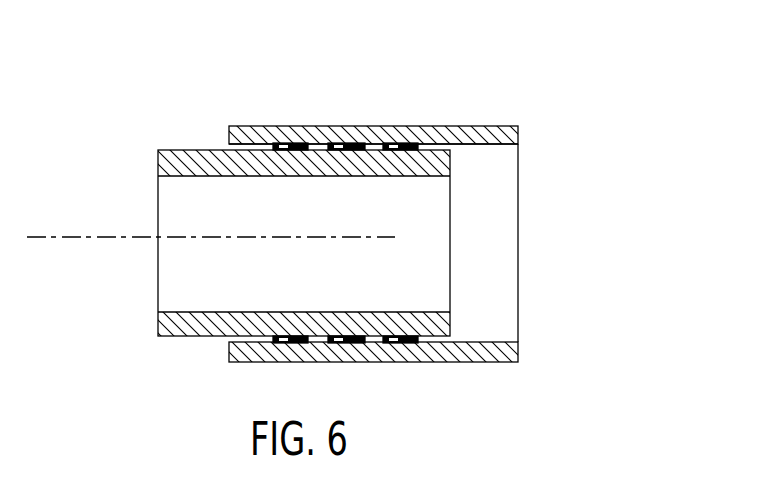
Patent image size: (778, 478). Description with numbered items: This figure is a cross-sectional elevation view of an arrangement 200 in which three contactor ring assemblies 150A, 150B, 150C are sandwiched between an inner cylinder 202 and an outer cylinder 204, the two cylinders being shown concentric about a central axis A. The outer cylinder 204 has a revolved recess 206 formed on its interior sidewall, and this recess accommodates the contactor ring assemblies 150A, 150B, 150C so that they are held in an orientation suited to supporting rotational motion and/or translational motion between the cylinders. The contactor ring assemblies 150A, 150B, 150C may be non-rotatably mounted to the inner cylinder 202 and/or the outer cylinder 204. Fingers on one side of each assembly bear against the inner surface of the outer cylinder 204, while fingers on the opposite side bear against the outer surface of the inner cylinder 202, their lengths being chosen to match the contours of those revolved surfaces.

The fluid conduit assembly 200 is at (389, 199).
The inner cylinder 202 is at (435, 323).
The outer cylinder 204 is at (502, 135).
The revolved recess 206 is at (287, 142).
The contactor ring assembly 150A is at (313, 143).
The contactor ring assembly 150B is at (367, 143).
The contactor ring assembly 150C is at (418, 143).
The longitudinal axis A is at (63, 237).